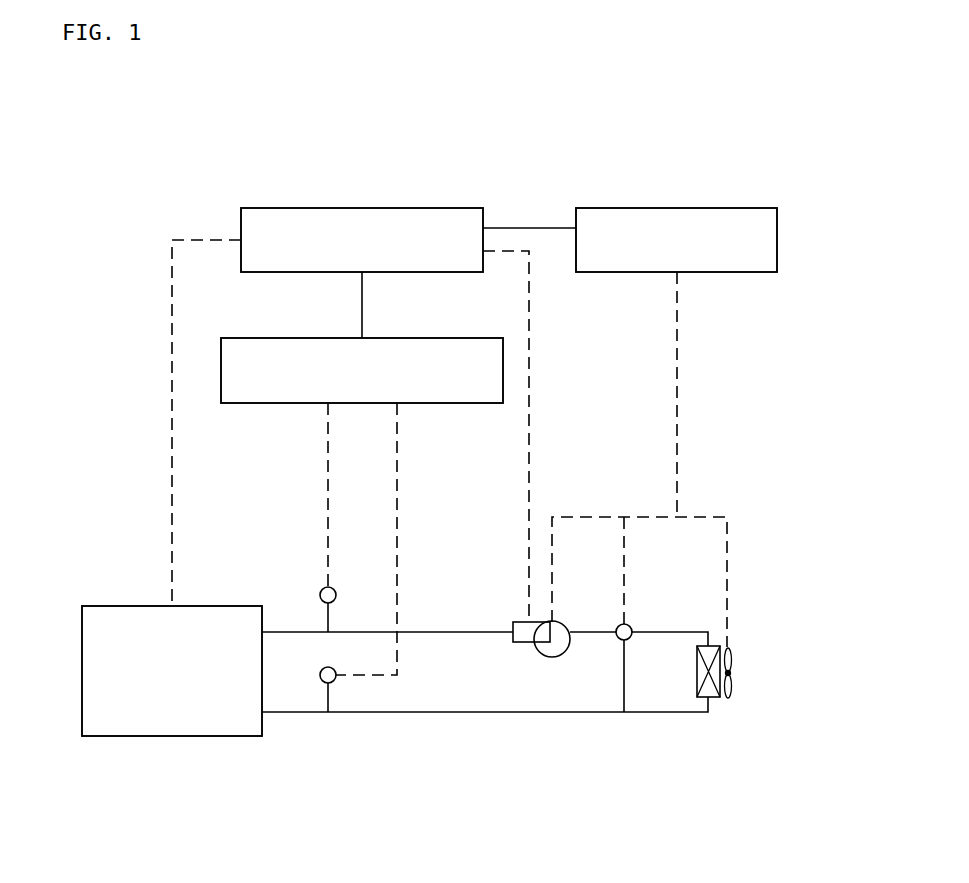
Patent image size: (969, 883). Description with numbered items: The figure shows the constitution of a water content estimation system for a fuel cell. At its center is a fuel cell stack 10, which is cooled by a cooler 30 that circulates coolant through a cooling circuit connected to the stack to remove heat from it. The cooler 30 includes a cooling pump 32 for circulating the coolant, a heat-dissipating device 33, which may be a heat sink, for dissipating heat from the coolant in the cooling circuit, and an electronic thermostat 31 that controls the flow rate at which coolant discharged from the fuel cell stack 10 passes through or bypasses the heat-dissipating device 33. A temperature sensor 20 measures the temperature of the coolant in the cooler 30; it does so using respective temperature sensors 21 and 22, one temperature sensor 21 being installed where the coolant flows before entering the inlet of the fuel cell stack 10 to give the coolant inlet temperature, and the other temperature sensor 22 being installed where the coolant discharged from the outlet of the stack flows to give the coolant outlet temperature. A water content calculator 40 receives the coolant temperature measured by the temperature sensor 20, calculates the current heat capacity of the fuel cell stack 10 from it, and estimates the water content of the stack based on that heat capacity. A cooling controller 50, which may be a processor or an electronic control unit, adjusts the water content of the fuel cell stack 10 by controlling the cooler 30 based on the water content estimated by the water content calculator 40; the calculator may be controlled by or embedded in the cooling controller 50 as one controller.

The fuel cell stack 10 is at (170, 736).
The temperature sensor 20 is at (443, 403).
The temperature sensor 21 is at (321, 591).
The temperature sensor 22 is at (323, 681).
The cooler 30 is at (745, 602).
The electronic thermostat 31 is at (627, 624).
The cooling pump 32 is at (521, 622).
The heat-dissipating device 33 is at (723, 702).
The water content calculator 40 is at (332, 208).
The cooling controller 50 is at (718, 208).